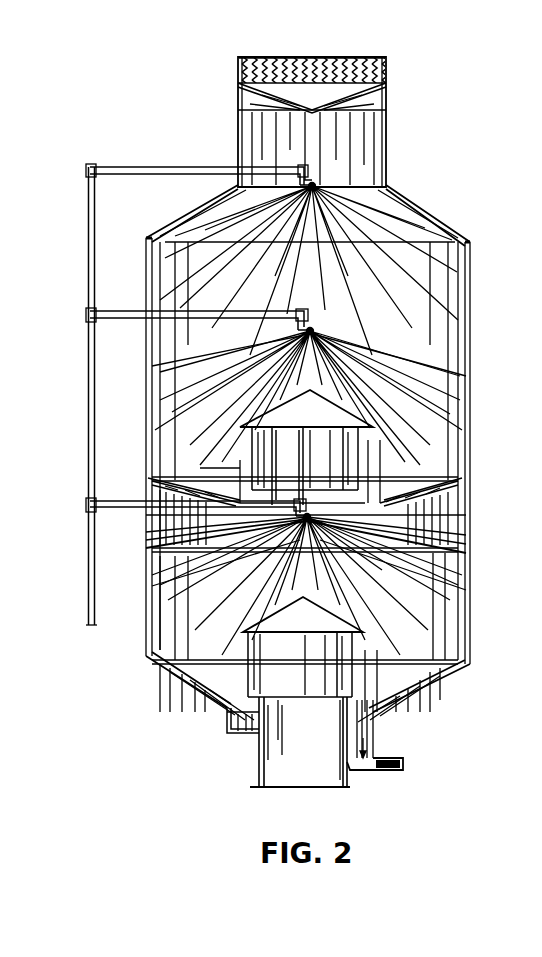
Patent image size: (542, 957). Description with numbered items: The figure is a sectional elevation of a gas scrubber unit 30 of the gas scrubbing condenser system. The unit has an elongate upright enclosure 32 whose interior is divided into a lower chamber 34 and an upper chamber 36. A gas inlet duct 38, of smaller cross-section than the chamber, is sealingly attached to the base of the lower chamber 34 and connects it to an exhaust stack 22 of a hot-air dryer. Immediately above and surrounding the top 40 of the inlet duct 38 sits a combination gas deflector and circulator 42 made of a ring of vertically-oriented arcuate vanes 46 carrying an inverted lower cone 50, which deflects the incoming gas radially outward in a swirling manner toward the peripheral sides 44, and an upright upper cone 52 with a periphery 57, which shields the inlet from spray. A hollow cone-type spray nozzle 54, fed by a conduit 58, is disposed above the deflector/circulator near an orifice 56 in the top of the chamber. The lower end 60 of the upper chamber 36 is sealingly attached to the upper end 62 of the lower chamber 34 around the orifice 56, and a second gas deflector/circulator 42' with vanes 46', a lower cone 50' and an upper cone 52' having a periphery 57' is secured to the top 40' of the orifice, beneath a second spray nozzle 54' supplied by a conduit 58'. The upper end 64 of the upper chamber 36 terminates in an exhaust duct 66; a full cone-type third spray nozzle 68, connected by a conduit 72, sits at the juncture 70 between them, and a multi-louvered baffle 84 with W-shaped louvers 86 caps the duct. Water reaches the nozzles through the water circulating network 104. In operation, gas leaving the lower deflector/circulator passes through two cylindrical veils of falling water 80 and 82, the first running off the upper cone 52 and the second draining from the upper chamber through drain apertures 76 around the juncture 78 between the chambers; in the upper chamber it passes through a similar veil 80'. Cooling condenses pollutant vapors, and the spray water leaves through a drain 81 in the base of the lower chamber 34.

The exhaust stack 22 is at (246, 777).
The gas scrubber unit 30 is at (176, 118).
The enclosure 32 is at (466, 328).
The lower chamber 34 is at (253, 593).
The upper chamber 36 is at (236, 403).
The gas inlet duct 38 is at (317, 756).
The top of the inlet duct 40 is at (287, 742).
The top of the orifice 40' is at (327, 466).
The gas deflector and circulator 42 is at (320, 665).
The second gas deflector/circulator 42' is at (326, 459).
The peripheral sides 44 is at (150, 602).
The vanes 46 is at (260, 664).
The vanes of the second gas deflector/circulator 46' is at (266, 458).
The lower cone 50 is at (267, 614).
The lower cone of the second gas deflector/circulator 50' is at (271, 410).
The upper cone 52 is at (309, 565).
The upper cone of the second gas deflector/circulator 52' is at (309, 369).
The spray nozzle 54 is at (307, 566).
The second spray nozzle 54' is at (308, 375).
The orifice 56 is at (222, 472).
The periphery of the upper cone 57 is at (398, 653).
The periphery of the upper cone of the second gas deflector/circulator 57' is at (405, 445).
The conduit 58 is at (196, 488).
The conduit 58' is at (198, 297).
The lower end of the upper chamber 60 is at (146, 520).
The upper end of the lower chamber 62 is at (146, 540).
The upper end of the upper chamber 64 is at (426, 214).
The exhaust duct 66 is at (388, 130).
The third spray nozzle 68 is at (314, 184).
The juncture 70 is at (386, 180).
The conduit 72 is at (162, 168).
The drain apertures 76 is at (345, 570).
The juncture between the upper and lower chambers 78 is at (146, 530).
The cylindrical veil of falling water 80 is at (300, 676).
The cylindrical veil of spray 80' is at (305, 499).
The drain 81 is at (388, 760).
The cylindrical veil of falling water 82 is at (462, 564).
The multi-louvered baffle 84 is at (238, 68).
The louvers 86 is at (298, 57).
The water circulating network 104 is at (86, 560).